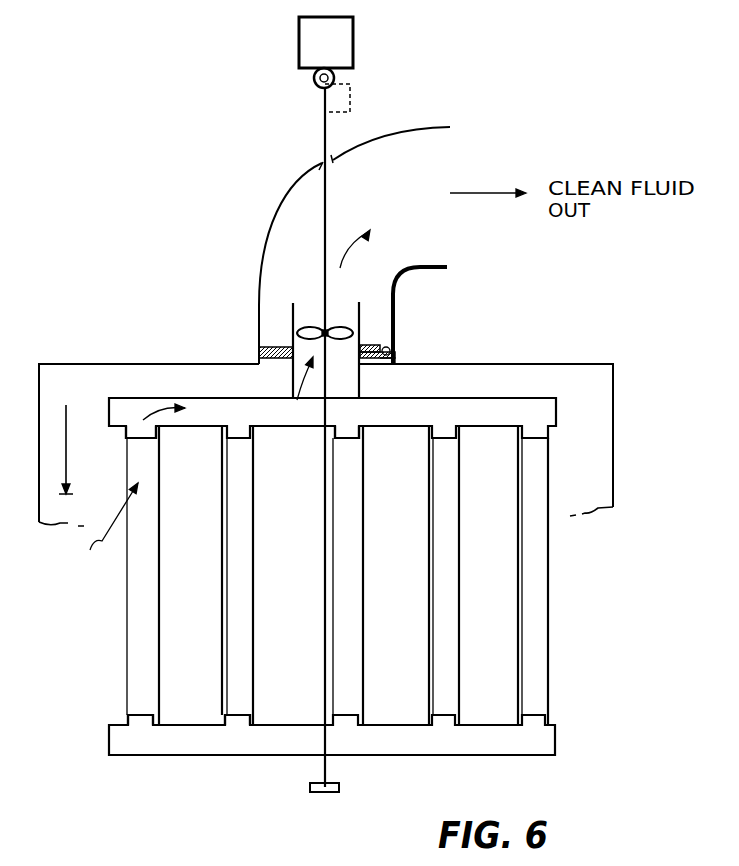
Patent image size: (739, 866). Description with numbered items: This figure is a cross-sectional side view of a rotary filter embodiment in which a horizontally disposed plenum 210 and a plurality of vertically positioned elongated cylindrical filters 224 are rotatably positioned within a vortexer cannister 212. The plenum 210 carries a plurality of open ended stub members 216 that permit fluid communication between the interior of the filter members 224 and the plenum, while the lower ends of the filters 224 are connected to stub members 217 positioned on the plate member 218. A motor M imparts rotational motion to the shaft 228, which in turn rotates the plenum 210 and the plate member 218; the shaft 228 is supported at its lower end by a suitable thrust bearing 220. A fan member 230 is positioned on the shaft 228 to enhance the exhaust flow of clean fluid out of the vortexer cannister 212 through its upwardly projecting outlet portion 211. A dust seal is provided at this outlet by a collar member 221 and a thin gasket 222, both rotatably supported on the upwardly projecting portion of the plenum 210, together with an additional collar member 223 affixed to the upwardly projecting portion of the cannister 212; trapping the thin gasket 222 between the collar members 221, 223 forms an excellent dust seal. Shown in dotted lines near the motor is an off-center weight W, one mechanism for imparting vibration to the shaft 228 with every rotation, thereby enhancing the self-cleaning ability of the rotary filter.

The motor M is at (341, 42).
The off-center weight W is at (358, 93).
The plenum 210 is at (470, 413).
The inlet neck 211 is at (362, 380).
The vortexer cannister 212 is at (137, 334).
The open ended stub members 216 is at (143, 434).
The stub members 217 is at (236, 718).
The plate member 218 is at (374, 745).
The thrust bearing 220 is at (306, 787).
The collar member 221 is at (363, 346).
The thin gasket 222 is at (389, 352).
The collar member 223 is at (393, 366).
The elongated cylindrical filters 224 is at (227, 562).
The shaft 228 is at (328, 528).
The fan member 230 is at (349, 330).